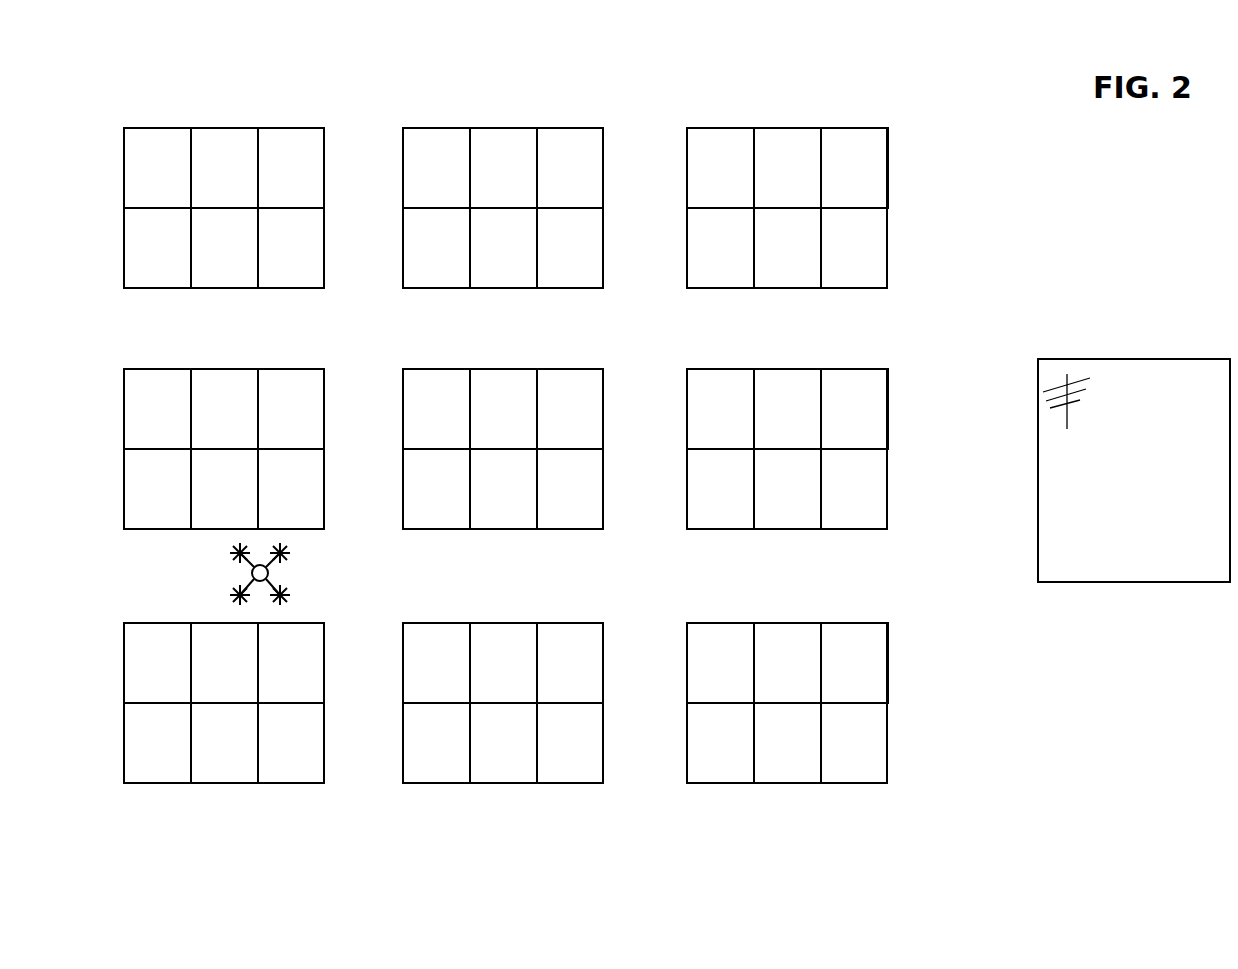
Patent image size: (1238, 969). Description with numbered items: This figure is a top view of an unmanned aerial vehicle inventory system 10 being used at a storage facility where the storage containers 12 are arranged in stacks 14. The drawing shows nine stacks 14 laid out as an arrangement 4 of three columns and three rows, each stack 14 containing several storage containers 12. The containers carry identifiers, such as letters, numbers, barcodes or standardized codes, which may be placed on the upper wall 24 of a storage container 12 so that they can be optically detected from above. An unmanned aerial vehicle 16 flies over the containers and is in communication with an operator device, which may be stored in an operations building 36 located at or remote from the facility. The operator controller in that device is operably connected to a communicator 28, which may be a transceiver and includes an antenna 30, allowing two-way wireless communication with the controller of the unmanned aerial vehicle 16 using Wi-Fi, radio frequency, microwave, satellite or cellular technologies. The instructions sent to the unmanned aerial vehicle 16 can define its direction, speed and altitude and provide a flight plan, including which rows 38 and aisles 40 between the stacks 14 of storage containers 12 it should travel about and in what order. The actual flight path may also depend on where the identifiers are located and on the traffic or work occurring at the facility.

The solar power plant 4 is at (968, 188).
The UAV inventory system 10 is at (973, 697).
The storage container 12 is at (866, 756).
The stack of storage containers 14 is at (509, 460).
The unmanned aerial vehicle 16 is at (268, 573).
The upper wall 24 is at (875, 148).
The communicator 28 is at (1091, 357).
The antenna 30 is at (1067, 418).
The operations building 36 is at (1107, 497).
The row 38 is at (870, 340).
The aisle 40 is at (374, 771).